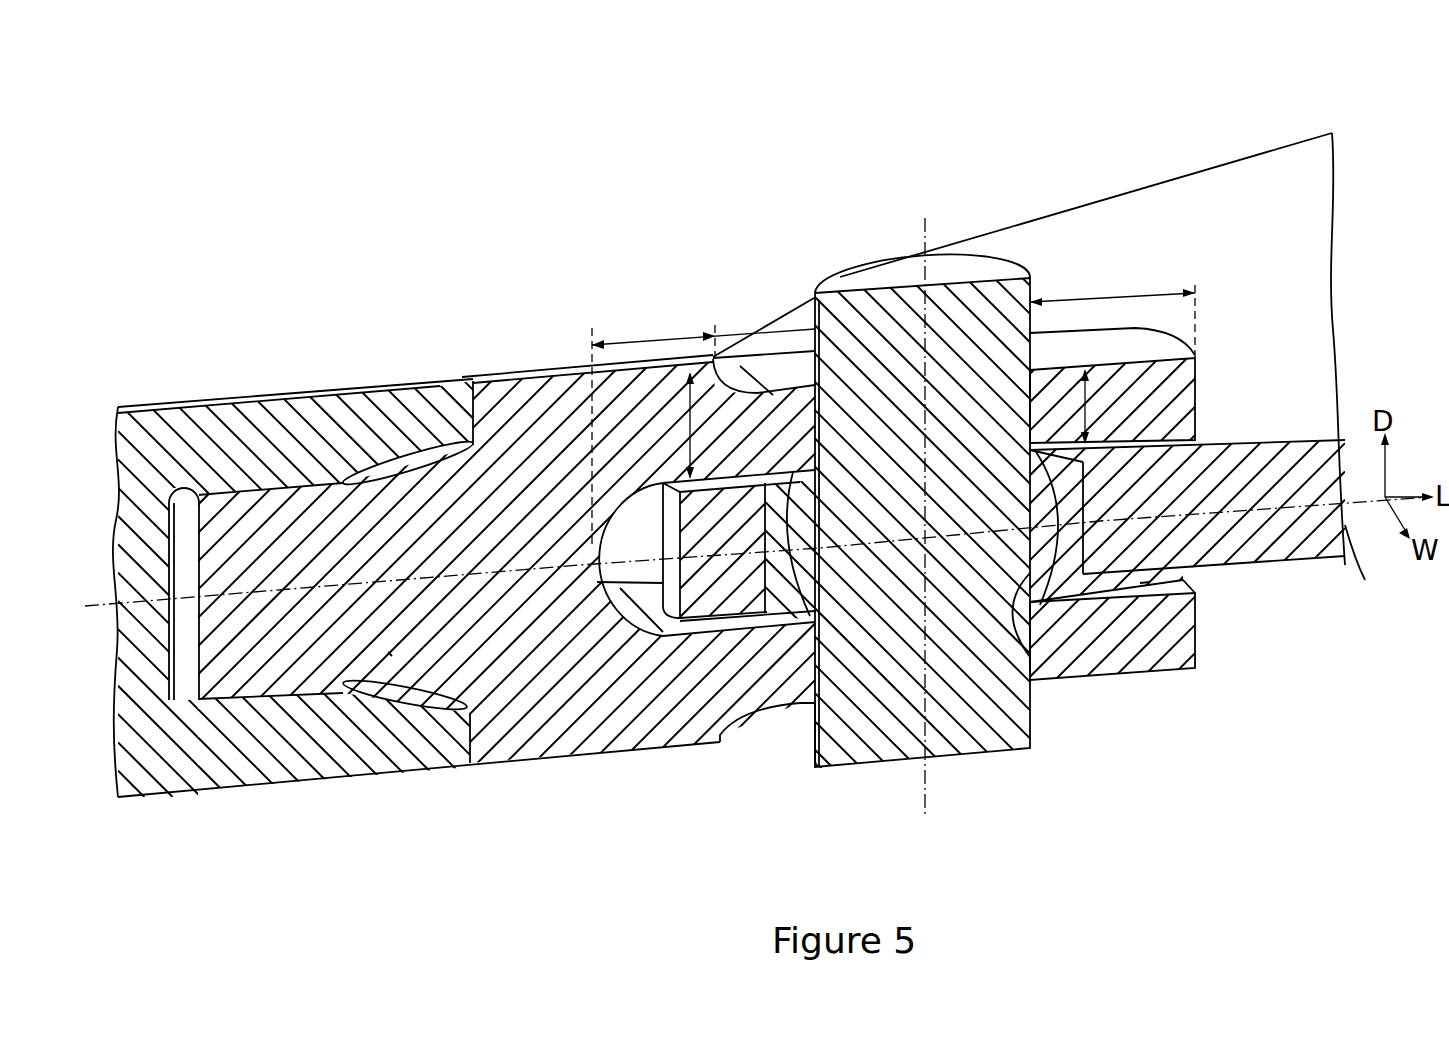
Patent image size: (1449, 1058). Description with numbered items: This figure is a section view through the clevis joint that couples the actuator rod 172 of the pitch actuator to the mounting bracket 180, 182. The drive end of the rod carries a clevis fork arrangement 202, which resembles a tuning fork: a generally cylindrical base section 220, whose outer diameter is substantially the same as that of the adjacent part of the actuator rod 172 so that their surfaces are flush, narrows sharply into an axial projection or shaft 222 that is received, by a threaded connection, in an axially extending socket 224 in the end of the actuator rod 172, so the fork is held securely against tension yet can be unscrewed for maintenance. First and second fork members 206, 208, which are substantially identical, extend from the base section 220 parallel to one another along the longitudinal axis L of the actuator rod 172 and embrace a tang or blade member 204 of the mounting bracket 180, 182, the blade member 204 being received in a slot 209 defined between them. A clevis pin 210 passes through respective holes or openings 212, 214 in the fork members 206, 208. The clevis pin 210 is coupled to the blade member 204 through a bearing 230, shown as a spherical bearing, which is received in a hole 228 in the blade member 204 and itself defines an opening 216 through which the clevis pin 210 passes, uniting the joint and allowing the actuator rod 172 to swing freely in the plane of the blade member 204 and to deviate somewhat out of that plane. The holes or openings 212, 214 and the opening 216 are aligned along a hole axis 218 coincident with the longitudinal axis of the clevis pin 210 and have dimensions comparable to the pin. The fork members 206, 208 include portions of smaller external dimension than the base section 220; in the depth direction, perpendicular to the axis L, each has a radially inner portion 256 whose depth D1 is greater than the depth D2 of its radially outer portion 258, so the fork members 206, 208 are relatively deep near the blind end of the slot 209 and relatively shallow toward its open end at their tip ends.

The actuator rod 172 is at (255, 772).
The clevis fork arrangement 202 is at (590, 792).
The blade member 204 is at (1178, 195).
The first fork member 206 is at (1202, 383).
The second fork member 208 is at (1198, 642).
The slot 209 is at (1140, 583).
The clevis pin 210 is at (848, 277).
The hole 212 is at (828, 430).
The hole 214 is at (828, 655).
The opening 216 is at (1030, 650).
The hole axis 218 is at (928, 790).
The base section 220 is at (519, 370).
The axial projection 222 is at (388, 652).
The socket 224 is at (296, 500).
The hole 228 is at (1080, 505).
The bearing 230 is at (775, 640).
The radially inner portion 256 is at (703, 427).
The radially outer portion 258 is at (1112, 300).
The mounting bracket 180 is at (1310, 158).
The mounting bracket 182 is at (1357, 565).
The depth dimension of inner portion D1 is at (712, 425).
The depth dimension of outer portion D2 is at (1107, 406).